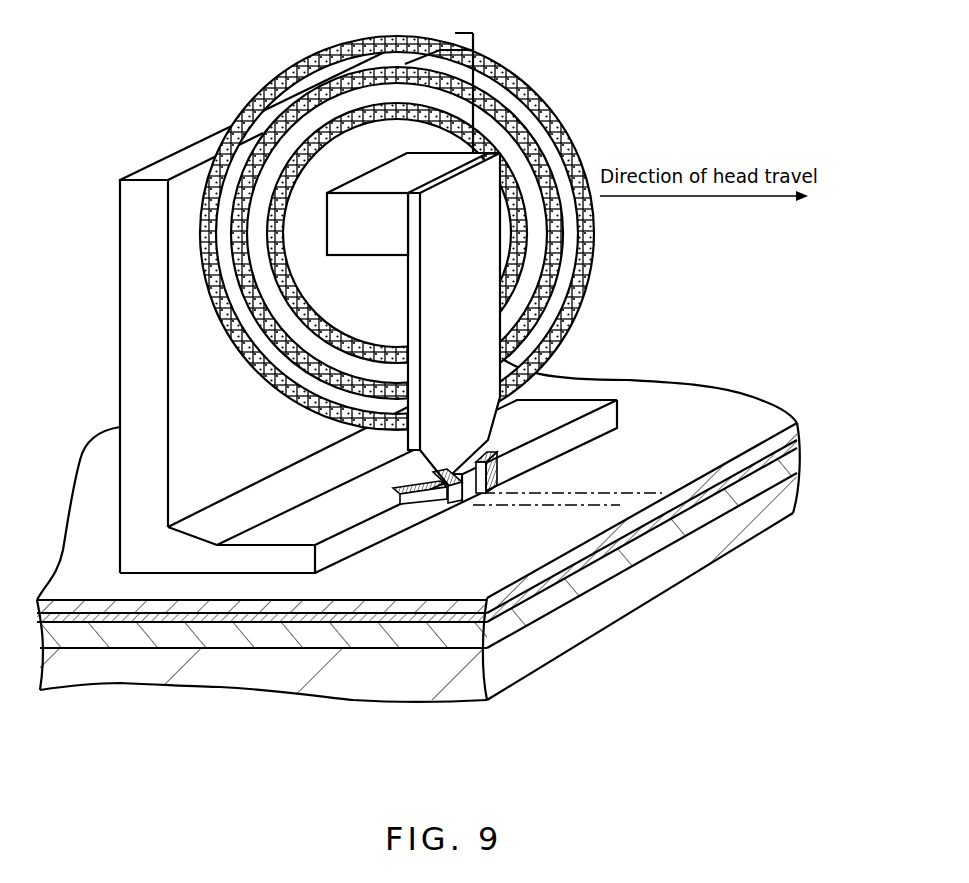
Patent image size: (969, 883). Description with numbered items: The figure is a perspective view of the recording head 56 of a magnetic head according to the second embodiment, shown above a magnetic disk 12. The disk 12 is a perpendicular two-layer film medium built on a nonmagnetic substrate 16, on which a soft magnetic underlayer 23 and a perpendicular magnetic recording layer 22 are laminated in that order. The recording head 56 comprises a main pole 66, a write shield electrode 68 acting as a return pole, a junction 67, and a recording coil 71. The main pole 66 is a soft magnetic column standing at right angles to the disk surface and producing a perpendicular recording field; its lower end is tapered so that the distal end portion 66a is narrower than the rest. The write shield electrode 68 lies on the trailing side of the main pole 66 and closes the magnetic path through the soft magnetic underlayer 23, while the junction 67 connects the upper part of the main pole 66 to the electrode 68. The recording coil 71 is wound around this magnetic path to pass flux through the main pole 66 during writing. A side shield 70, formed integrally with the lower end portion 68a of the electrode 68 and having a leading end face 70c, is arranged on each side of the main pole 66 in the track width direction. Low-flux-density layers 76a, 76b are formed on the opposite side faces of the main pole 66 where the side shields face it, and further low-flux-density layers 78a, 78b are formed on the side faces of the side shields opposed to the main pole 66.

The magnetic disk 12 is at (484, 441).
The substrate 16 is at (650, 597).
The perpendicular magnetic recording layer 22 is at (752, 412).
The soft magnetic underlayer 23 is at (715, 510).
The recording head 56 is at (197, 375).
The main pole 66 is at (526, 291).
The distal end portion 66a is at (470, 497).
The junction 67 is at (360, 256).
The write shield electrode 68 is at (130, 293).
The lower end portion 68a is at (205, 560).
The side shield 70 is at (368, 465).
The leading end face 70c is at (375, 537).
The recording coil 71 is at (590, 115).
The low-flux-density layer 76a is at (472, 457).
The low-flux-density layer 76b is at (437, 472).
The low-flux-density layer 78a is at (500, 465).
The low-flux-density layer 78b is at (407, 490).